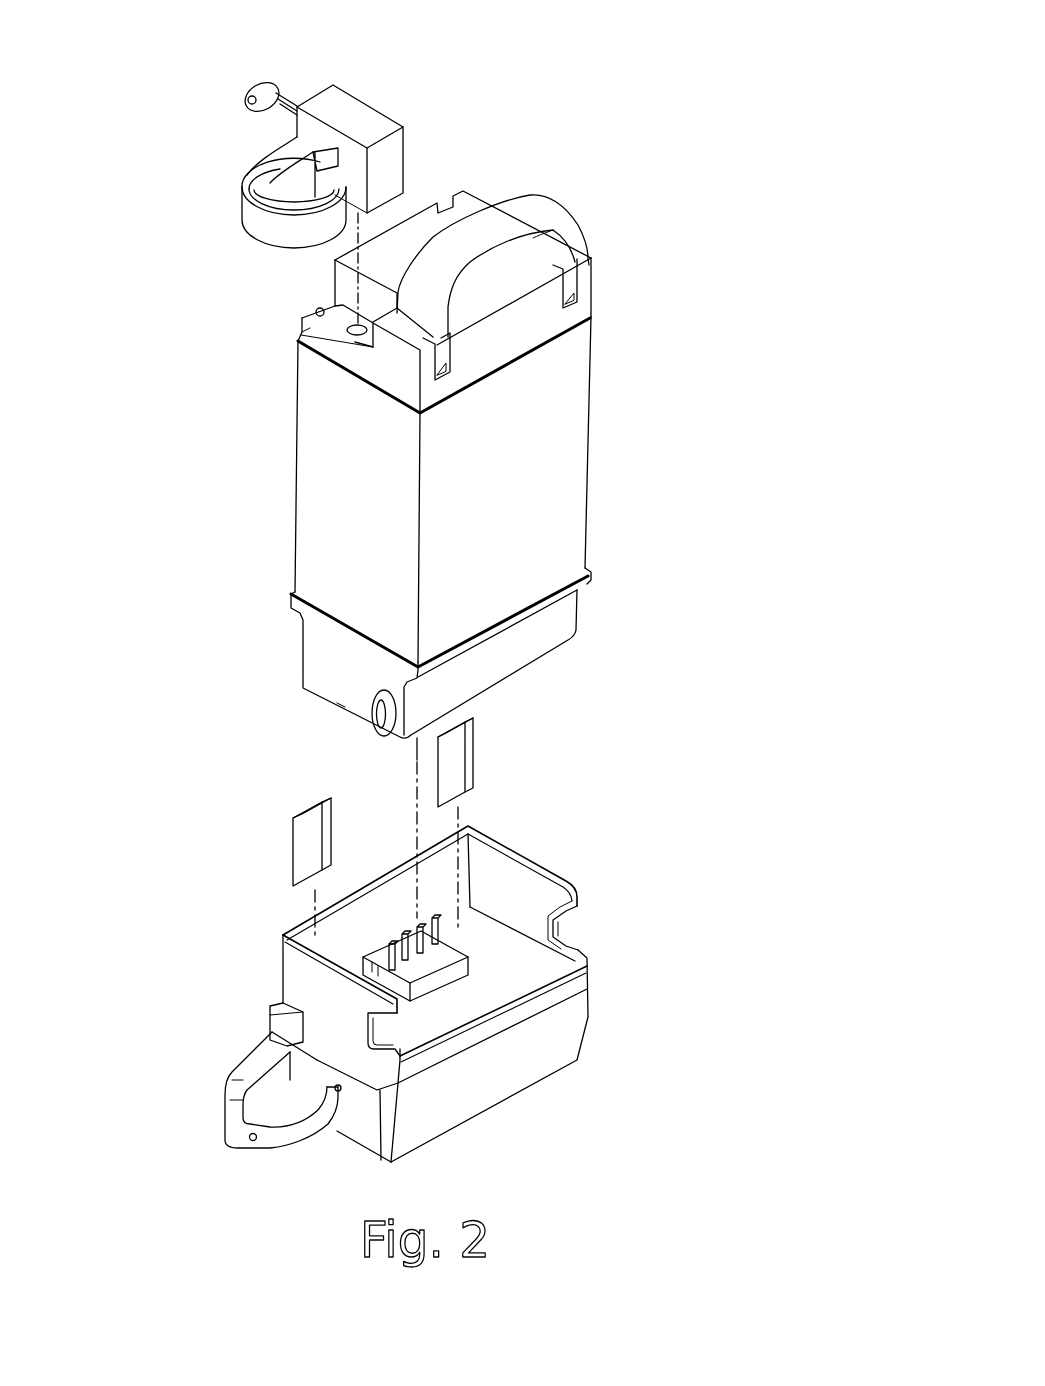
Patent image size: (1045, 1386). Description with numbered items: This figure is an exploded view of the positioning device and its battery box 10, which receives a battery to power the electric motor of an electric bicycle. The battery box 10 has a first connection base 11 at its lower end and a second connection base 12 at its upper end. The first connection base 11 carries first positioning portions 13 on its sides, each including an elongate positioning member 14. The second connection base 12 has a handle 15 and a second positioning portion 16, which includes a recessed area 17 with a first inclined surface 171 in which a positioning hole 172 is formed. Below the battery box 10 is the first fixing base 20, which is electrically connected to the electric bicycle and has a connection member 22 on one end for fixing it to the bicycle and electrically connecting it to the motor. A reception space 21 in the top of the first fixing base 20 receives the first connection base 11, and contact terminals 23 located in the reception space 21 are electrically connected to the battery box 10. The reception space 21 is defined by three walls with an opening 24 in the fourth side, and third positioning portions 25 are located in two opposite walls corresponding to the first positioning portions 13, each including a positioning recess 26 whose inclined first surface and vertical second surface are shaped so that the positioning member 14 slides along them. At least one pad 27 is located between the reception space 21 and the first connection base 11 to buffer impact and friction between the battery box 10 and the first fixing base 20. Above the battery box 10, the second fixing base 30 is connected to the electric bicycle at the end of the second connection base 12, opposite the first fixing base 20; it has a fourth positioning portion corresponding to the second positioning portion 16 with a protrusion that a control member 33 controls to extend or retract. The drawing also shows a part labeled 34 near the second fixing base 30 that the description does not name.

The battery box 10 is at (567, 472).
The first connection base 11 is at (512, 653).
The second connection base 12 is at (478, 213).
The first positioning portion 13 is at (338, 715).
The positioning member 14 is at (373, 712).
The handle 15 is at (543, 222).
The second positioning portion 16 is at (302, 315).
The recessed area 17 is at (370, 306).
The first inclined surface 171 is at (338, 328).
The positioning hole 172 is at (342, 328).
The first fixing base 20 is at (482, 1088).
The reception space 21 is at (497, 943).
The connection member 22 is at (313, 1140).
The contact terminals 23 is at (400, 933).
The opening 24 is at (503, 975).
The third positioning portion 25 is at (585, 909).
The positioning recess 26 is at (575, 918).
The pad 27 is at (297, 852).
The second fixing base 30 is at (367, 113).
The control member 33 is at (263, 115).
The ring clamp 34 is at (257, 218).